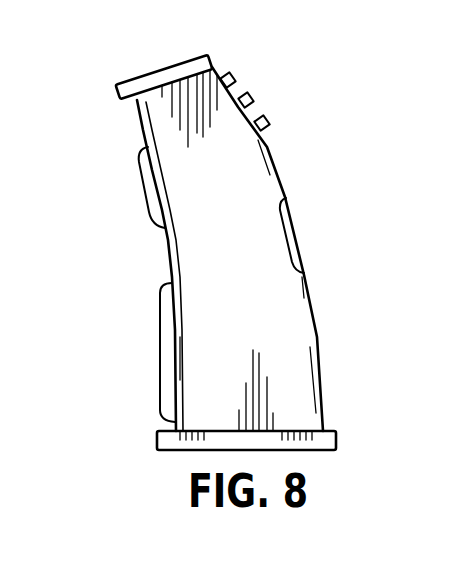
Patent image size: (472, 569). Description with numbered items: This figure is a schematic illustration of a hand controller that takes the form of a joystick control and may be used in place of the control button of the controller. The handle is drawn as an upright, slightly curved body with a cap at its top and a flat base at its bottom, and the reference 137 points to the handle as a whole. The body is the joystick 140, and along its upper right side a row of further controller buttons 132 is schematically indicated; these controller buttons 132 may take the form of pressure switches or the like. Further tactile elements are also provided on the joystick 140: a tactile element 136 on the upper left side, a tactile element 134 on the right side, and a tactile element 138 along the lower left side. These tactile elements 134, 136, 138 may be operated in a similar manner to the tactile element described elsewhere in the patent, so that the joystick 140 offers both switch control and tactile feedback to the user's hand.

The controller buttons 132 is at (250, 96).
The tactile element 134 is at (290, 234).
The tactile element 136 is at (140, 152).
The handle 137 is at (110, 233).
The tactile element 138 is at (162, 404).
The joystick 140 is at (172, 67).